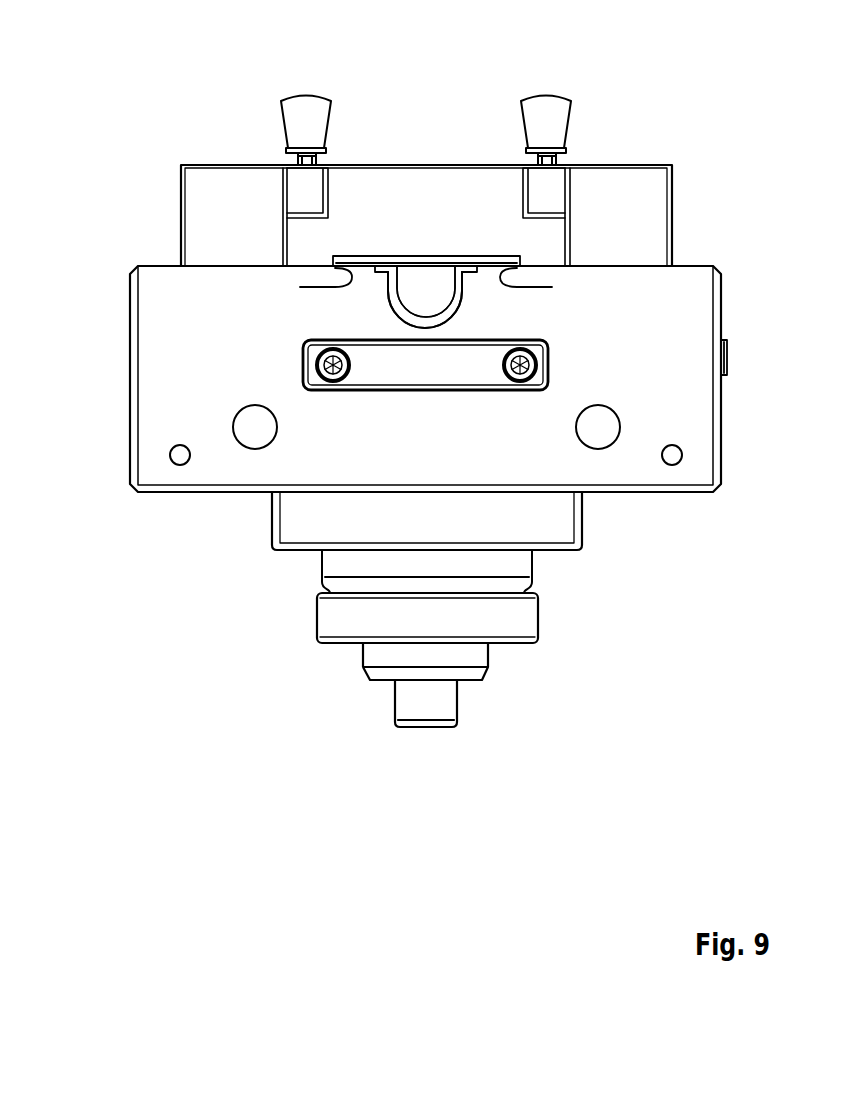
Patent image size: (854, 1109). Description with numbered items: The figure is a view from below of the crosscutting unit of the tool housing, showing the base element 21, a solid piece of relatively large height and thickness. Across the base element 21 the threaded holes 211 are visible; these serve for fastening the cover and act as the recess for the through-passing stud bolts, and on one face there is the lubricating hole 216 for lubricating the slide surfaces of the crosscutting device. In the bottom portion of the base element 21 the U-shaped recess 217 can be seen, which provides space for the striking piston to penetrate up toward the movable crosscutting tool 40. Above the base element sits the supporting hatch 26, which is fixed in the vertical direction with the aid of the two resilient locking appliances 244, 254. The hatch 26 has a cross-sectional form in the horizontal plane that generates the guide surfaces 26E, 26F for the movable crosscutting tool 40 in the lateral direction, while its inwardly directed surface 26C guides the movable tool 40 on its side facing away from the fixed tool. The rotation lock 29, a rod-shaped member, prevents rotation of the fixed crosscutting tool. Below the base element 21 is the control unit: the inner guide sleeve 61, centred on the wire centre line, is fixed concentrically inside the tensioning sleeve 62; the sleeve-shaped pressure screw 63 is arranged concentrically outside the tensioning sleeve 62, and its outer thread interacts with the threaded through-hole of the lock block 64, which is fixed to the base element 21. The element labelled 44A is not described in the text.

The base element 21 is at (650, 437).
The supporting hatch 26 is at (460, 177).
The inwardly directed surface 26C is at (428, 268).
The guide surface 26E is at (300, 287).
The guide surface 26F is at (552, 284).
The movable crosscutting tool 40 is at (370, 265).
The pin 44A is at (435, 303).
The threaded holes 211 is at (247, 428).
The lubricating hole 216 is at (727, 352).
The recess 217 is at (408, 328).
The resilient locking appliance 244 is at (302, 127).
The resilient locking appliance 254 is at (557, 127).
The rotation lock 29 is at (450, 373).
The lock block 64 is at (302, 532).
The pressure screw 63 is at (343, 618).
The tensioning sleeve 62 is at (380, 658).
The guide sleeve 61 is at (412, 705).